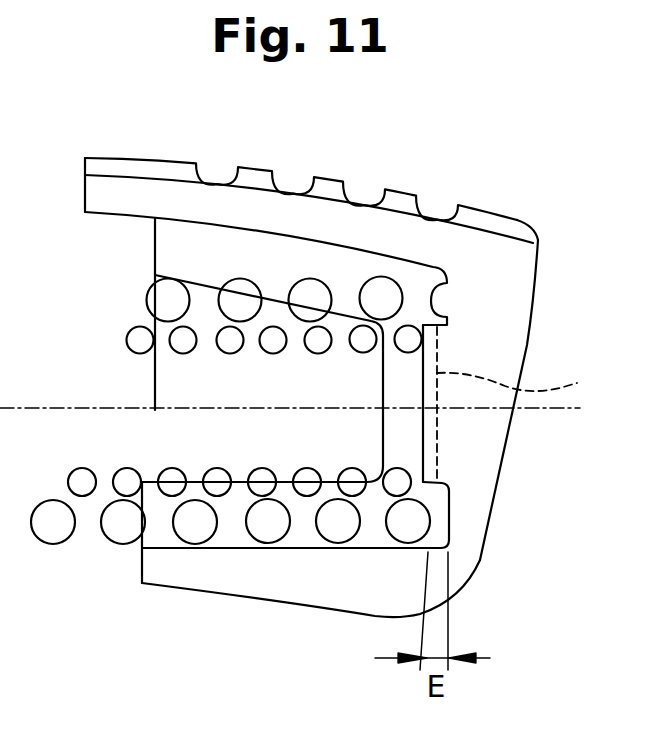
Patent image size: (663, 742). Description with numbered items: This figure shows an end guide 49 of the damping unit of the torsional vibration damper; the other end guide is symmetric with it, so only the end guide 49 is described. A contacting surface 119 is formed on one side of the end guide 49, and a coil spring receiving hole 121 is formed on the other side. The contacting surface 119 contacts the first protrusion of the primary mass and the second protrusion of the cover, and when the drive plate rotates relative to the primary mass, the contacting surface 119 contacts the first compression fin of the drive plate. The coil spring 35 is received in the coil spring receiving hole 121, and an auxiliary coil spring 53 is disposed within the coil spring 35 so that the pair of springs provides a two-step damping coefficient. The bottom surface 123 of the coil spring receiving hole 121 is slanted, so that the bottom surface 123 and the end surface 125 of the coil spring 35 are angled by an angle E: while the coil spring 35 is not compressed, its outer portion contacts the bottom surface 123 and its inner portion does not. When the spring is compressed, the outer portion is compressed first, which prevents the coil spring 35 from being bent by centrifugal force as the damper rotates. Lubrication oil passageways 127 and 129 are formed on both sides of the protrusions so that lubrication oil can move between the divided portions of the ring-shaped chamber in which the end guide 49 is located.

The end guide 49 is at (389, 372).
The contacting surface 119 is at (507, 457).
The lubrication oil passageway 127 is at (127, 157).
The lubrication oil passageway 129 is at (305, 172).
The coil spring receiving hole 121 is at (282, 350).
The end surface 125 is at (535, 404).
The bottom surface 123 is at (450, 512).
The auxiliary coil spring 53 is at (80, 470).
The coil spring 35 is at (46, 542).